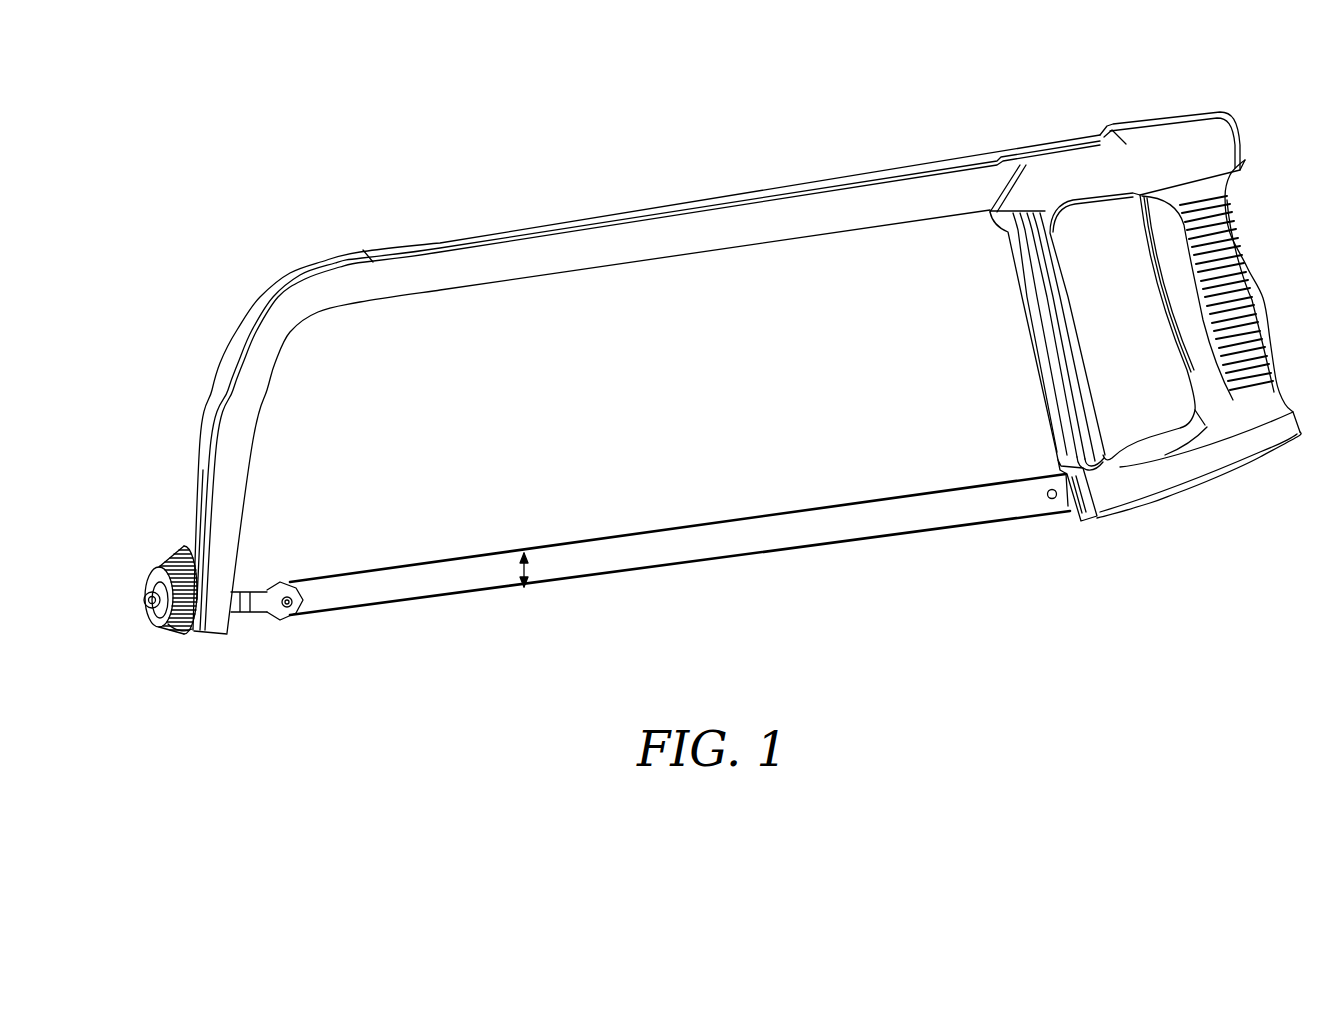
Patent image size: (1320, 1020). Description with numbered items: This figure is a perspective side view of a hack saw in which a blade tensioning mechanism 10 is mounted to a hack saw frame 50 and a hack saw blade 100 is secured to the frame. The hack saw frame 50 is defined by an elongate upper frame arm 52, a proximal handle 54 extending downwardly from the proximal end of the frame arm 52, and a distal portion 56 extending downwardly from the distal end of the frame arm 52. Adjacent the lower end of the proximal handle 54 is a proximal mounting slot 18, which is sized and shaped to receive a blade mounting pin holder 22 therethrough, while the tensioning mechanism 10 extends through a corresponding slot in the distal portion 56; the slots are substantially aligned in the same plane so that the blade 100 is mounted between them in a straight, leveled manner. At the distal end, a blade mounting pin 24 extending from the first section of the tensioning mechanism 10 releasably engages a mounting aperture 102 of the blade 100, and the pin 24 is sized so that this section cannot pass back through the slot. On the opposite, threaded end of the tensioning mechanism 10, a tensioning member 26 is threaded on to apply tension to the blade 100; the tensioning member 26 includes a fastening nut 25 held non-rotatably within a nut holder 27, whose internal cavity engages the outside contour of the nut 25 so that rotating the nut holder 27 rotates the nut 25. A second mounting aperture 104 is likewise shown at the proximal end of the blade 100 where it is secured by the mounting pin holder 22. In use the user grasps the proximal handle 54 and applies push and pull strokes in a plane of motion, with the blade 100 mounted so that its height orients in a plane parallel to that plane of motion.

The hack saw blade tensioning mechanism 10 is at (255, 590).
The proximal mounting slot 18 is at (1080, 522).
The blade mounting pin holder 22 is at (1073, 503).
The blade mounting pin 24 is at (288, 612).
The fastening nut 25 is at (145, 597).
The tensioning member 26 is at (175, 633).
The nut holder 27 is at (167, 567).
The hack saw frame 50 is at (696, 203).
The upper frame arm 52 is at (584, 246).
The proximal handle 54 is at (1238, 221).
The distal portion 56 is at (209, 414).
The hack saw blade 100 is at (695, 526).
The mounting aperture 102 is at (282, 588).
The rear blade mounting hole 104 is at (1047, 490).